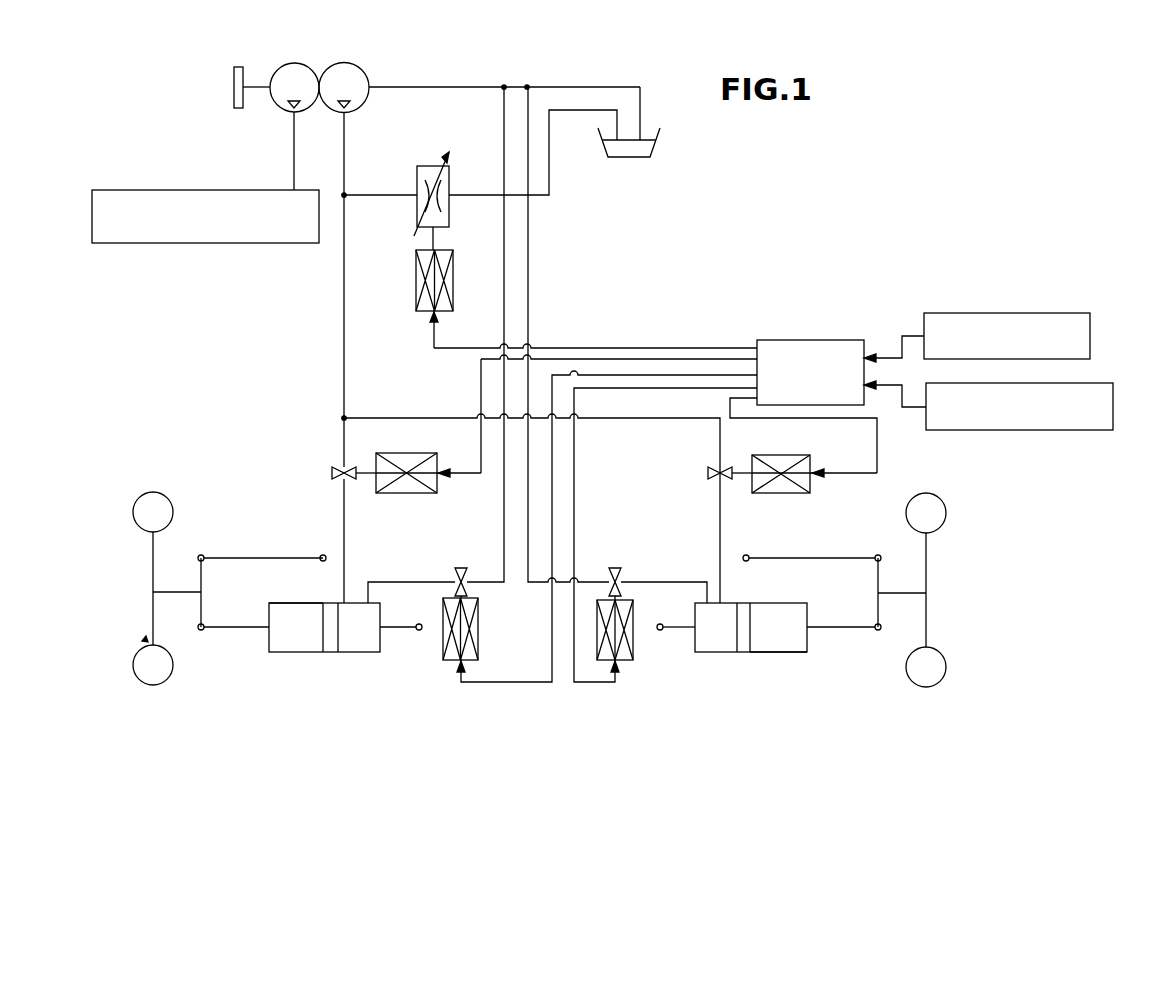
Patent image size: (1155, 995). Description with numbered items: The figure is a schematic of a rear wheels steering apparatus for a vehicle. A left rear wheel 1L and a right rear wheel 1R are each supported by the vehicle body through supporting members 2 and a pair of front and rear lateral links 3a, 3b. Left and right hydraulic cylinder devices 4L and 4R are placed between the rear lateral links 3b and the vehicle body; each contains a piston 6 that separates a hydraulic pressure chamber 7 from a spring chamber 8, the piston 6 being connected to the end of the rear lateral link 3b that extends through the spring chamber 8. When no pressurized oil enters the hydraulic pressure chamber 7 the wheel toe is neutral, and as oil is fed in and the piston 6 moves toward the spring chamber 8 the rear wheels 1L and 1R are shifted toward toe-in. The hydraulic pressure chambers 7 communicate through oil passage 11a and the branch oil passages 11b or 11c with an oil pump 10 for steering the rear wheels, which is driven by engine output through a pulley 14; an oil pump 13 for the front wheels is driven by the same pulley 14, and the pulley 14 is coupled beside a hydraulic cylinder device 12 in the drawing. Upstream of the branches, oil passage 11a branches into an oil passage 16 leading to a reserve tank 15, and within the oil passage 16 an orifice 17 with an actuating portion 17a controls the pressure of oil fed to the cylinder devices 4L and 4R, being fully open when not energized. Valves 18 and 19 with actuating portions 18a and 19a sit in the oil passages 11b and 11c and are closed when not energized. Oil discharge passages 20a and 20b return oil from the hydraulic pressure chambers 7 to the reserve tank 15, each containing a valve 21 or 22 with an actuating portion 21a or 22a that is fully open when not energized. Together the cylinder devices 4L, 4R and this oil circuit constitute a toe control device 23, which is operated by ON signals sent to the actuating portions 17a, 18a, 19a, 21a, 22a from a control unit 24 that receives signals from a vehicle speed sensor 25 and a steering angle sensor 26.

The left rear wheel 1L is at (138, 497).
The right rear wheel 1R is at (944, 504).
The supporting member 2 is at (204, 579).
The front lateral link 3a is at (245, 558).
The rear lateral link 3b is at (226, 628).
The left hydraulic cylinder device 4L is at (317, 658).
The right hydraulic cylinder device 4R is at (758, 660).
The piston 6 is at (322, 606).
The hydraulic pressure chamber 7 is at (360, 652).
The spring chamber 8 is at (288, 652).
The oil pump 10 is at (357, 69).
The oil passage 11a is at (344, 312).
The oil passage 11b is at (344, 500).
The oil passage 11c is at (720, 508).
The hydraulic cylinder device 12 is at (213, 190).
The oil pump for front wheels 13 is at (297, 67).
The pulley 14 is at (233, 79).
The reserve tank 15 is at (655, 152).
The oil passage 16 is at (380, 195).
The orifice 17 is at (450, 178).
The actuating portion 17a is at (416, 276).
The valve 18 is at (337, 469).
The actuating portion 18a is at (396, 493).
The valve 19 is at (710, 472).
The actuating portion 19a is at (788, 456).
The oil discharge passage 20a is at (504, 520).
The oil discharge passage 20b is at (666, 582).
The valve 21 is at (461, 568).
The actuating portion 21a is at (480, 639).
The valve 22 is at (615, 568).
The actuating portion 22a is at (636, 664).
The toe control device 23 is at (438, 681).
The control unit 24 is at (808, 340).
The vehicle speed sensor 25 is at (1000, 313).
The steering angle sensor 26 is at (984, 431).